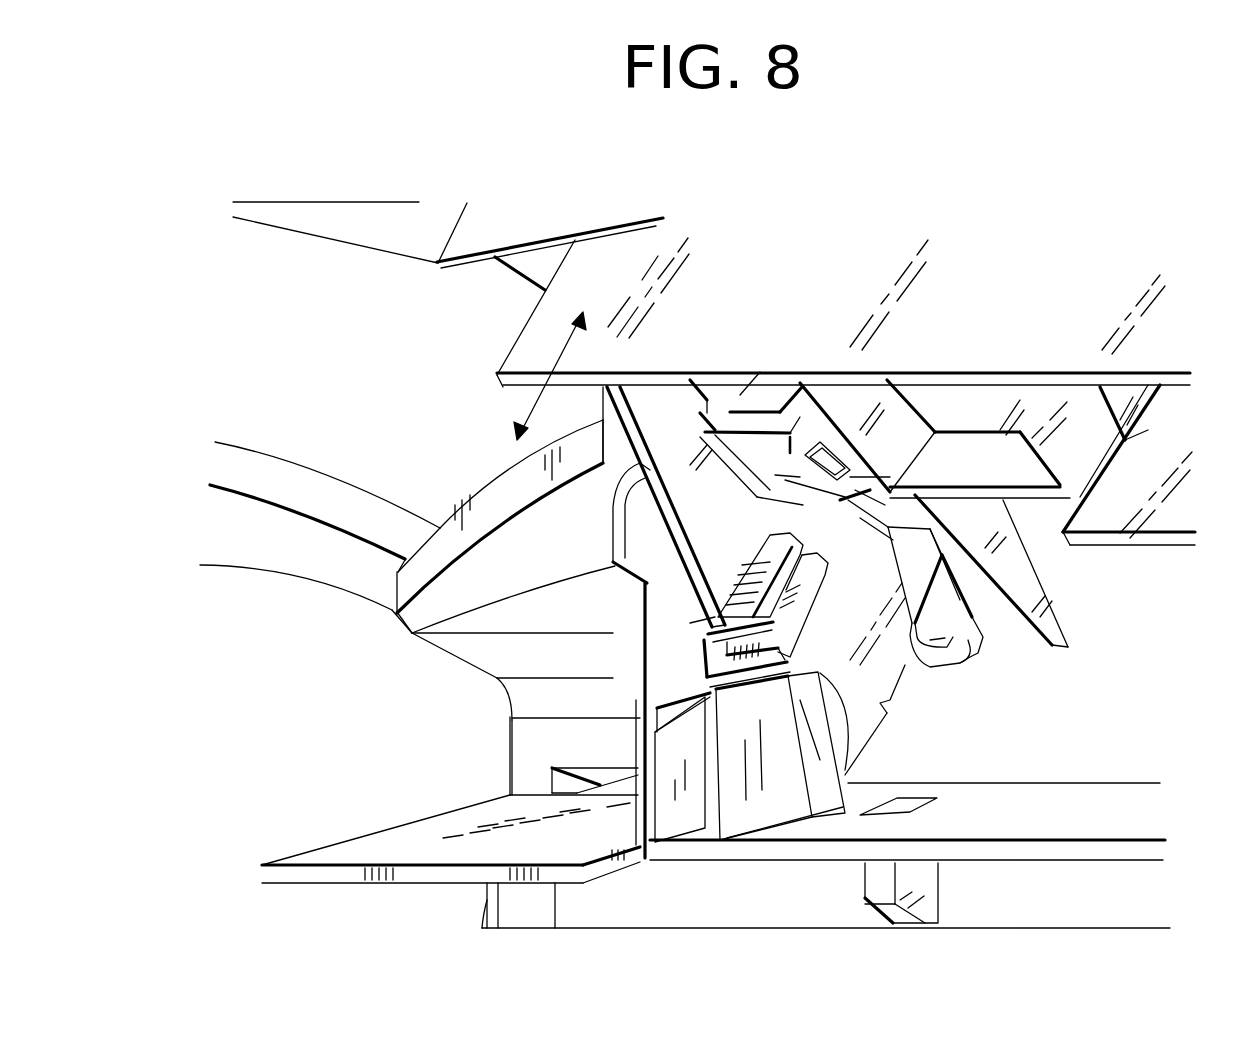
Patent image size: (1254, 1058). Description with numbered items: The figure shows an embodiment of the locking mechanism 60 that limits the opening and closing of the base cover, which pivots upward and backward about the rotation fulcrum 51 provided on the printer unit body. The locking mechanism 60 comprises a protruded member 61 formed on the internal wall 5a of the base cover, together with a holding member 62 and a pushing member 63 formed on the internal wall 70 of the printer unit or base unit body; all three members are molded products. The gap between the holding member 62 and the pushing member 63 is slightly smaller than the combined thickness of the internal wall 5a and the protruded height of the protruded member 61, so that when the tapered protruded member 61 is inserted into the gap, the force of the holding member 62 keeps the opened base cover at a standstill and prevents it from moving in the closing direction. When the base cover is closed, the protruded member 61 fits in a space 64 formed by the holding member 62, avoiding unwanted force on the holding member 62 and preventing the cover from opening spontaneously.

The internal wall 5a is at (663, 410).
The rotation fulcrum 51 is at (855, 701).
The locking mechanism 60 is at (924, 744).
The protruded member 61 is at (818, 593).
The holding member 62 is at (762, 785).
The pushing member 63 is at (677, 680).
The space 64 is at (683, 792).
The internal wall 70 is at (1041, 828).